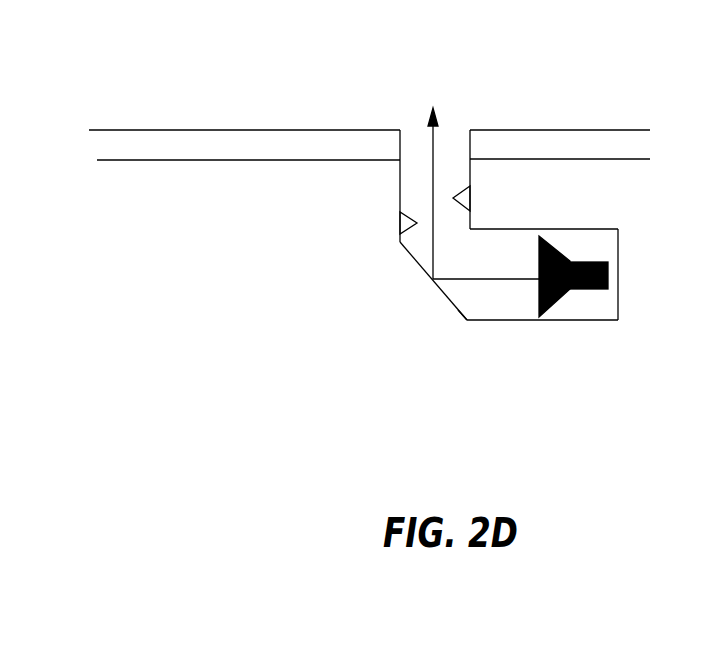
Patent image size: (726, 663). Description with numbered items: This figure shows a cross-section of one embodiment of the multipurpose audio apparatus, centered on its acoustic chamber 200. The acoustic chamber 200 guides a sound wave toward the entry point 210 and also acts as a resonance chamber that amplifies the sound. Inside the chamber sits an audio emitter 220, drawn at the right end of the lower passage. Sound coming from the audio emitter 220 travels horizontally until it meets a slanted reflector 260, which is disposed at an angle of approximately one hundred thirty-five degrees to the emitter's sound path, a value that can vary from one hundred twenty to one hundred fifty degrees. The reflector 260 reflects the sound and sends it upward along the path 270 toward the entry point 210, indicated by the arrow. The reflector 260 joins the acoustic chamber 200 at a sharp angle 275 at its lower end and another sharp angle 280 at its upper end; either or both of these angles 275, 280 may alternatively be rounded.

The acoustic chamber 200 is at (404, 204).
The entry point 210 is at (470, 130).
The audio emitter 220 is at (608, 262).
The slanted reflector 260 is at (432, 279).
The path 270 is at (432, 155).
The sharp angle 275 is at (462, 314).
The sharp angle 280 is at (400, 242).